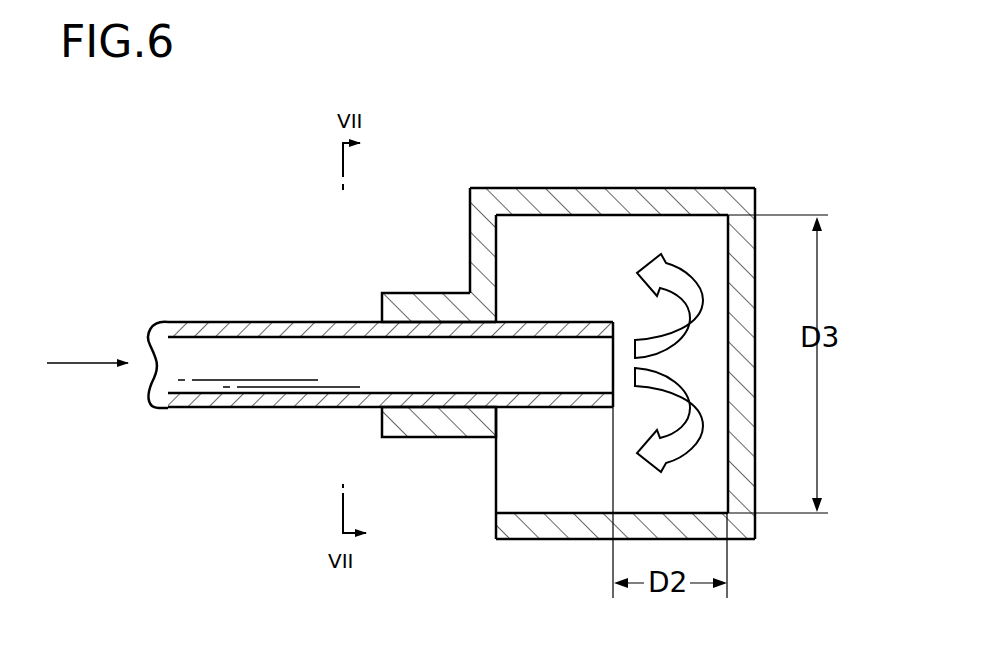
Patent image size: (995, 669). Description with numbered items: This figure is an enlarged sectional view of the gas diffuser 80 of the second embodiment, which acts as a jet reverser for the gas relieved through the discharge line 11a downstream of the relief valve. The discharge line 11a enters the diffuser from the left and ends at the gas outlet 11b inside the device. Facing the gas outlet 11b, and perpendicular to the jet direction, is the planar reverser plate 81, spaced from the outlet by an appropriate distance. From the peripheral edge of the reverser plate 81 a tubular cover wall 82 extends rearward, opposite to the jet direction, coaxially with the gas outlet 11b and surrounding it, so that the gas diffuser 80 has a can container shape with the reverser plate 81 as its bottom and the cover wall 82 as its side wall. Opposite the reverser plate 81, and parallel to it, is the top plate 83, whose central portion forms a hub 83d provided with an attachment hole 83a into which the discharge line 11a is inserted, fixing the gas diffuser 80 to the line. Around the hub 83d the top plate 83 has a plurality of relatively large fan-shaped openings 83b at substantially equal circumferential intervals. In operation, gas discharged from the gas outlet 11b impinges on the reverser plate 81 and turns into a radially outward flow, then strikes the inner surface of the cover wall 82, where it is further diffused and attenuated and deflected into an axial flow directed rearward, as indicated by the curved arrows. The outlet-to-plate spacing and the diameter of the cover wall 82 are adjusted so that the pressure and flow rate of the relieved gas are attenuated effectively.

The gas diffuser 80 is at (544, 324).
The reverser plate 81 is at (727, 374).
The cover wall 82 is at (565, 190).
The top plate 83 is at (470, 263).
The attachment hole 83a is at (450, 390).
The fan-shaped openings 83b is at (496, 483).
The hub 83d is at (382, 293).
The discharge line 11a is at (220, 322).
The gas outlet 11b is at (613, 357).